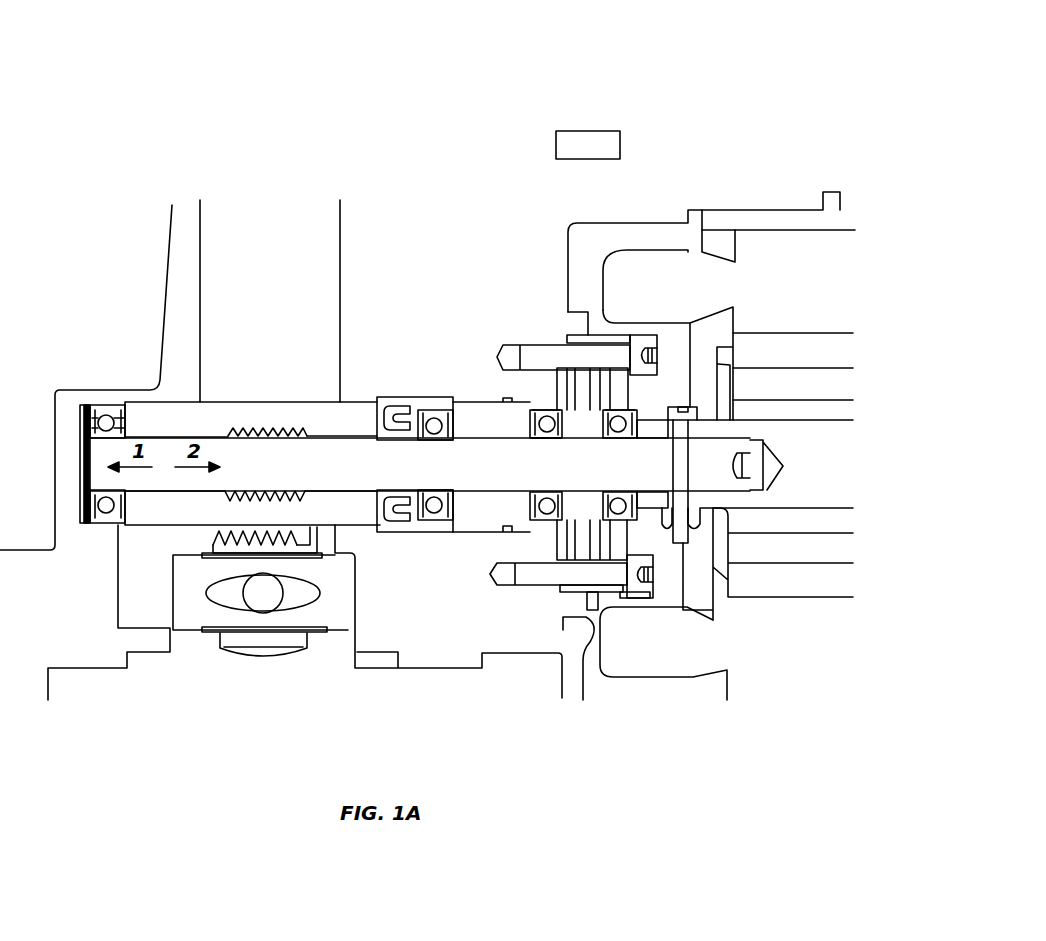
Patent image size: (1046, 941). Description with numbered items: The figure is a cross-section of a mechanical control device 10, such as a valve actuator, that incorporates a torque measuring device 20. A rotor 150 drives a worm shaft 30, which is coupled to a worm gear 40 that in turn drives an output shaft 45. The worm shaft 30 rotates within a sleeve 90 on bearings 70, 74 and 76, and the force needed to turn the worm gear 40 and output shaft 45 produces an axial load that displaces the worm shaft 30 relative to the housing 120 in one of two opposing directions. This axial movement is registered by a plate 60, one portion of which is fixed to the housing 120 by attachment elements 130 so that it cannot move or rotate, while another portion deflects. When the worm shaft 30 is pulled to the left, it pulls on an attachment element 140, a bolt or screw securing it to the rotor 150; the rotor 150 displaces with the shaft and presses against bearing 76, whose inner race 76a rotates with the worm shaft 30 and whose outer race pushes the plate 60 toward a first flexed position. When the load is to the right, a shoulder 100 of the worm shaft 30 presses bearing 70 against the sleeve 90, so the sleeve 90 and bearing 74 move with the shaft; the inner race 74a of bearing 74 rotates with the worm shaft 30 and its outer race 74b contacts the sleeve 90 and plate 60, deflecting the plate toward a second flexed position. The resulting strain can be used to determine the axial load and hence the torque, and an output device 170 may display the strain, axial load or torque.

The mechanical control device 10 is at (114, 95).
The torque measuring device 20 is at (515, 598).
The worm shaft 30 is at (271, 455).
The worm gear 40 is at (180, 512).
The output shaft 45 is at (200, 278).
The plate 60 is at (576, 381).
The bearing 70 is at (433, 418).
The bearing 74 is at (537, 426).
The inner race 74a is at (537, 440).
The outer race 74b is at (547, 412).
The bearing 76 is at (617, 430).
The inner race 76a is at (633, 440).
The sleeve 90 is at (472, 515).
The shoulder 100 is at (417, 487).
The housing 120 is at (657, 600).
The attachment elements 130 is at (545, 580).
The attachment element 140 is at (683, 545).
The rotor 150 is at (657, 430).
The output device 170 is at (587, 335).